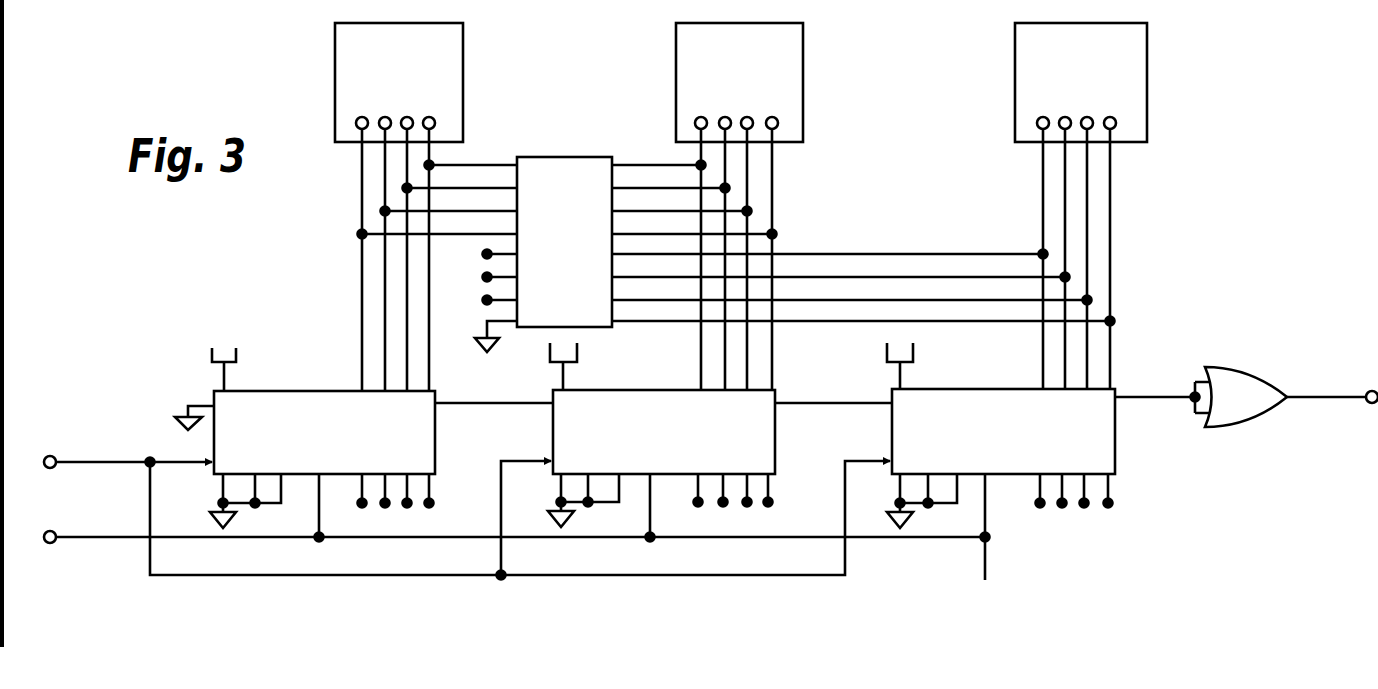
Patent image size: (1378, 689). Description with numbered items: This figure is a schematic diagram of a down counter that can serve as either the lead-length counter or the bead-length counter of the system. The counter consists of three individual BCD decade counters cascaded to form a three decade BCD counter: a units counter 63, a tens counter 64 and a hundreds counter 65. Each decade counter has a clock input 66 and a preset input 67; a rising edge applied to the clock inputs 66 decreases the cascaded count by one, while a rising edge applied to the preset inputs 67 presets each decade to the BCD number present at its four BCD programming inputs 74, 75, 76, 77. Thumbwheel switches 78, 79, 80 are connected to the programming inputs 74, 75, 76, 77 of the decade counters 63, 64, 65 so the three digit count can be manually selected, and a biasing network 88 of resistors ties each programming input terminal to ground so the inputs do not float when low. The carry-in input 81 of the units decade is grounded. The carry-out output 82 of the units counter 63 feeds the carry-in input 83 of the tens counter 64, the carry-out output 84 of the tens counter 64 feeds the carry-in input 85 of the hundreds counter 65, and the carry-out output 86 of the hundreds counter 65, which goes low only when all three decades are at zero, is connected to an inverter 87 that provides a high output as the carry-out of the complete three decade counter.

The units counter 63 is at (270, 398).
The tens counter 64 is at (622, 400).
The hundreds counter 65 is at (950, 400).
The clock input 66 is at (212, 470).
The preset input 67 is at (322, 478).
The BCD programming input 74 is at (360, 387).
The BCD programming input 75 is at (378, 388).
The BCD programming input 76 is at (410, 388).
The BCD programming input 77 is at (428, 388).
The thumbwheel switch 78 is at (448, 67).
The thumbwheel switch 79 is at (787, 69).
The thumbwheel switch 80 is at (1132, 59).
The carry-in input 81 is at (212, 400).
The carry-out output 82 is at (437, 405).
The carry-in input 83 is at (550, 408).
The carry-out output 84 is at (777, 405).
The carry-in input 85 is at (888, 408).
The carry-out output 86 is at (1120, 405).
The inverter 87 is at (1252, 380).
The biasing network 88 is at (575, 170).